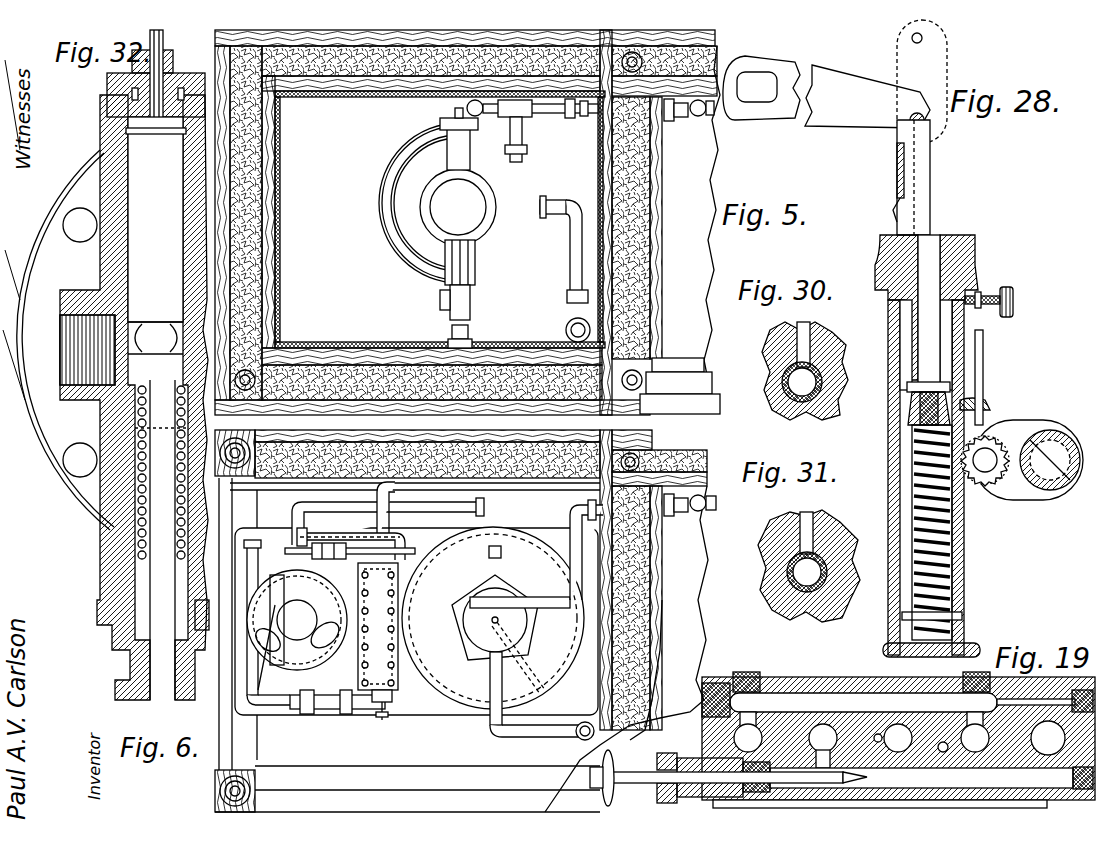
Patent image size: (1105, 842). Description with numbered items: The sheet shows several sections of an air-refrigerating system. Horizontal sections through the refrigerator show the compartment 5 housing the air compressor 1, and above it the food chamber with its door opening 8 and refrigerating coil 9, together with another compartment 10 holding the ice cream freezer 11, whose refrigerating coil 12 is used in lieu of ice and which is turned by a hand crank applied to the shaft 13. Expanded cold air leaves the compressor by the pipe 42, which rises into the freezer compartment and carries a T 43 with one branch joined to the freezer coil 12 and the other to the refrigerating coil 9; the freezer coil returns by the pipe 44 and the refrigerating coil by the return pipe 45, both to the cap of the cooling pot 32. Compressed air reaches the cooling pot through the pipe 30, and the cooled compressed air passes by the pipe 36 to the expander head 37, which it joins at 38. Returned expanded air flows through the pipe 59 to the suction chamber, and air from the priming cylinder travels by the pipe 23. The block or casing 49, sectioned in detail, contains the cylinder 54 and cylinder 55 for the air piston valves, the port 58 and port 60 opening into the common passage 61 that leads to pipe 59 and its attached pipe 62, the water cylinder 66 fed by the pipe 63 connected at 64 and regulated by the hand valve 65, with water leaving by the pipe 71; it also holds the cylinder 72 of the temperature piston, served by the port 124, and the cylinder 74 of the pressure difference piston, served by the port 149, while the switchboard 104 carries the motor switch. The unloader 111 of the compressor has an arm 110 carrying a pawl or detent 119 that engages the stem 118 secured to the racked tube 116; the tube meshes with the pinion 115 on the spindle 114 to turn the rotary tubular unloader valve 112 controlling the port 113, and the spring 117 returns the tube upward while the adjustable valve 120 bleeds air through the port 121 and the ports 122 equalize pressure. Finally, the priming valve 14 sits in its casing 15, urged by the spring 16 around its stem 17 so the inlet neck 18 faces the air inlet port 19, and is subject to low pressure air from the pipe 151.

In FIG. 32, the air compressor 1 is at (48, 448).
In FIG. 6, the compartment 5 is at (461, 621).
In FIG. 5, the door opening 8 is at (700, 395).
In FIG. 5, the refrigerating coil 9 is at (696, 116).
In FIG. 6, the refrigerating coil 9 is at (700, 512).
In FIG. 5, the compartment 10 is at (467, 222).
In FIG. 5, the ice cream freezer 11 is at (380, 210).
In FIG. 5, the refrigerating coil 12 is at (500, 250).
In FIG. 5, the shaft 13 is at (462, 415).
In FIG. 32, the feeding or priming valve 14 is at (156, 219).
In FIG. 32, the casing 15 is at (100, 268).
In FIG. 6, the casing 15 is at (297, 625).
In FIG. 32, the spring 16 is at (135, 540).
In FIG. 32, the stem 17 is at (162, 540).
In FIG. 32, the inlet neck 18 is at (162, 322).
In FIG. 32, the air inlet port 19 is at (68, 350).
In FIG. 6, the pipe 23 is at (260, 680).
In FIG. 6, the pipe 30 is at (352, 530).
In FIG. 6, the cooling pot 32 is at (493, 618).
In FIG. 6, the pipe 36 is at (560, 560).
In FIG. 6, the expander head 37 is at (322, 560).
In FIG. 6, the joint 38 is at (290, 575).
In FIG. 5, the pipe 42 is at (440, 120).
In FIG. 6, the pipe 42 is at (410, 506).
In FIG. 5, the T 43 is at (530, 117).
In FIG. 5, the pipe 44 is at (570, 275).
In FIG. 6, the pipe 44 is at (545, 735).
In FIG. 6, the return pipe 45 is at (550, 535).
In FIG. 19, the block or casing 49 is at (815, 677).
In FIG. 19, the cylinder 54 is at (748, 738).
In FIG. 19, the cylinder 55 is at (975, 738).
In FIG. 19, the port 58 is at (752, 720).
In FIG. 6, the pipe 59 is at (312, 710).
In FIG. 19, the port 60 is at (978, 720).
In FIG. 19, the passage 61 is at (863, 701).
In FIG. 19, the pipe 62 is at (704, 713).
In FIG. 6, the pipe 63 is at (290, 482).
In FIG. 19, the connection 64 is at (1070, 776).
In FIG. 6, the hand valve 65 is at (390, 720).
In FIG. 19, the hand valve 65 is at (626, 760).
In FIG. 19, the water cylinder 66 is at (823, 746).
In FIG. 6, the pipe 71 is at (500, 488).
In FIG. 19, the cylinder 72 is at (898, 738).
In FIG. 19, the cylinder 74 is at (1048, 738).
In FIG. 6, the switchboard 104 is at (398, 625).
In FIG. 28, the arm 110 is at (855, 82).
In FIG. 28, the unloader 111 is at (978, 280).
In FIG. 30, the rotary tubular unloader valve 112 is at (822, 375).
In FIG. 31, the rotary tubular unloader valve 112 is at (790, 585).
In FIG. 30, the port 113 is at (800, 342).
In FIG. 31, the port 113 is at (812, 530).
In FIG. 28, the spindle 114 is at (1040, 432).
In FIG. 28, the pinion 115 is at (988, 458).
In FIG. 28, the racked tube 116 is at (966, 530).
In FIG. 28, the spring 117 is at (966, 568).
In FIG. 28, the stem 118 is at (932, 235).
In FIG. 28, the pawl or detent 119 is at (897, 163).
In FIG. 28, the adjustable valve 120 is at (1002, 298).
In FIG. 28, the port 121 is at (920, 308).
In FIG. 28, the ports 122 is at (985, 395).
In FIG. 19, the port 124 is at (880, 735).
In FIG. 19, the port 149 is at (1048, 674).
In FIG. 32, the pipe 151 is at (163, 38).